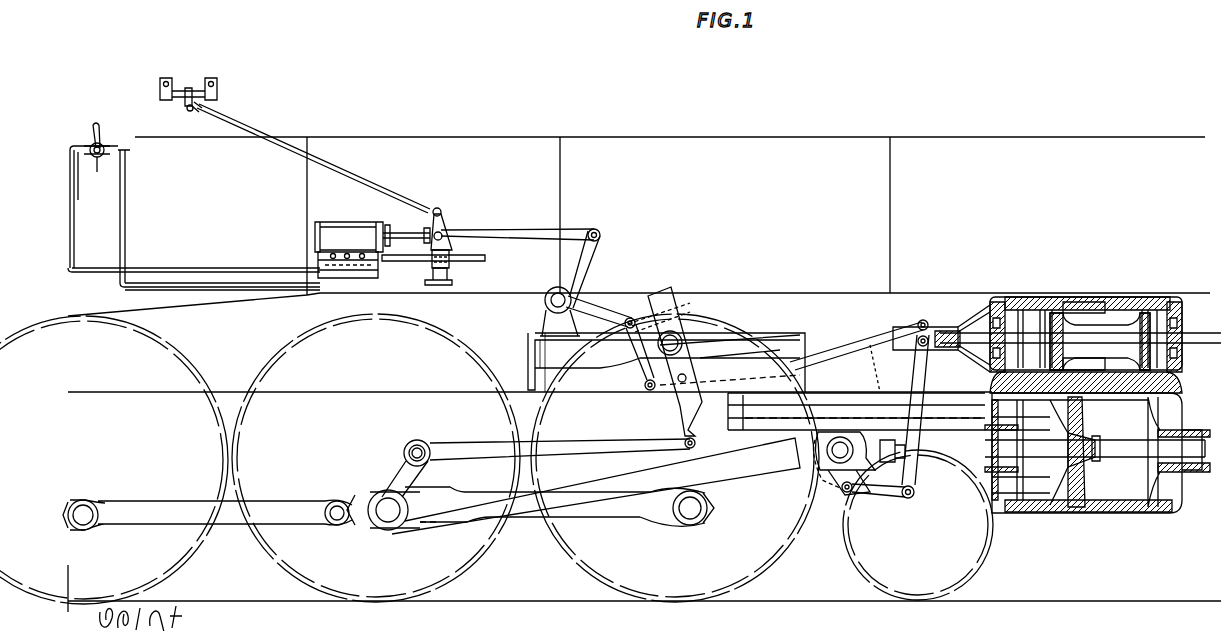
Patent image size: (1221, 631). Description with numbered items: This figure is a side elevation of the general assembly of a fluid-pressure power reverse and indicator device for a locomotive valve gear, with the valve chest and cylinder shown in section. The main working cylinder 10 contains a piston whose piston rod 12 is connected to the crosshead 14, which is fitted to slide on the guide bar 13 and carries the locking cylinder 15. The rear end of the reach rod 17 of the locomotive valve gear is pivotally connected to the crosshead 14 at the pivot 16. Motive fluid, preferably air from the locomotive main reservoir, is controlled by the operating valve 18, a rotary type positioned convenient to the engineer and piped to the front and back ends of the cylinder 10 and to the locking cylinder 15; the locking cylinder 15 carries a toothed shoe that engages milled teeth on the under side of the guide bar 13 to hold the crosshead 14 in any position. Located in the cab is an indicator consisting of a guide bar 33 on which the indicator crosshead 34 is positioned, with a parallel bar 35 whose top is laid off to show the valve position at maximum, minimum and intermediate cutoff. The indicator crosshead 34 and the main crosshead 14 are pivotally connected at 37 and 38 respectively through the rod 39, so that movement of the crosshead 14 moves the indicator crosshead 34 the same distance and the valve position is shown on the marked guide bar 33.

The main working cylinder 10 is at (342, 222).
The piston rod 12 is at (400, 233).
The guide bar 13 is at (478, 261).
The crosshead 14 is at (446, 254).
The locking cylinder 15 is at (448, 276).
The pivot 16 is at (443, 232).
The reach rod 17 is at (500, 230).
The operating valve 18 is at (106, 140).
The guide bar 33 is at (185, 98).
The crosshead 34 is at (200, 105).
The bar 35 is at (180, 92).
The pivotal connection 37 is at (190, 112).
The pivotal connection 38 is at (438, 209).
The rod 39 is at (318, 164).